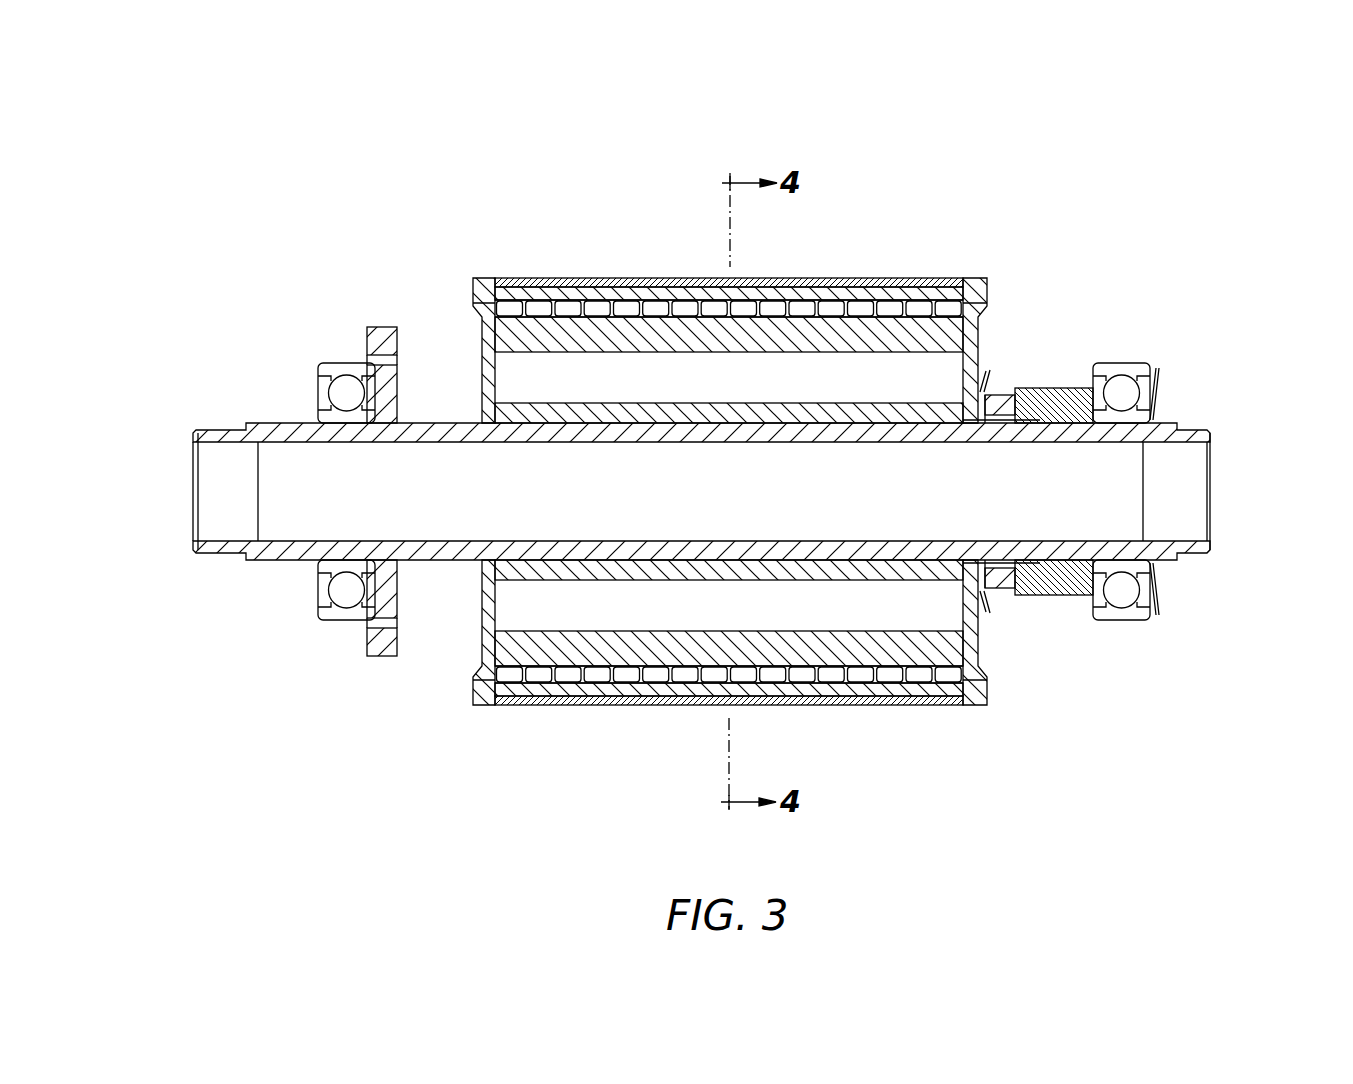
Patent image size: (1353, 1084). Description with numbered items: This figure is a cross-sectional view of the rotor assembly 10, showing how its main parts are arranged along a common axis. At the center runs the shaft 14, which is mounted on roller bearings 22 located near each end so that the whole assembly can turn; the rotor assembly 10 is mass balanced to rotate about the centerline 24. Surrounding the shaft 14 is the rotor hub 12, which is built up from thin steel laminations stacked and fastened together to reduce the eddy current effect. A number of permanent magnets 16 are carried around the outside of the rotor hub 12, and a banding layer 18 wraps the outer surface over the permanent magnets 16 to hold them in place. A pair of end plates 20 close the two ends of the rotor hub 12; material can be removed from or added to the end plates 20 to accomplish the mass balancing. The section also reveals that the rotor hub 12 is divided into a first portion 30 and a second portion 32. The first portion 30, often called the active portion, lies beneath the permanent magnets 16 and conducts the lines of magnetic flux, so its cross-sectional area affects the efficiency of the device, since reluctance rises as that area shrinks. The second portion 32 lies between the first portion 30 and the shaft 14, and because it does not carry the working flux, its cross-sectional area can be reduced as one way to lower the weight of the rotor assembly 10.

The rotor assembly 10 is at (202, 160).
The rotor hub 12 is at (920, 332).
The shaft 14 is at (283, 562).
The permanent magnets 16 is at (806, 308).
The banding layer 18 is at (905, 278).
The end plates 20 is at (480, 612).
The roller bearings 22 is at (1121, 362).
The centerline 24 is at (1230, 492).
The first portion 30 is at (456, 277).
The second portion 32 is at (463, 423).